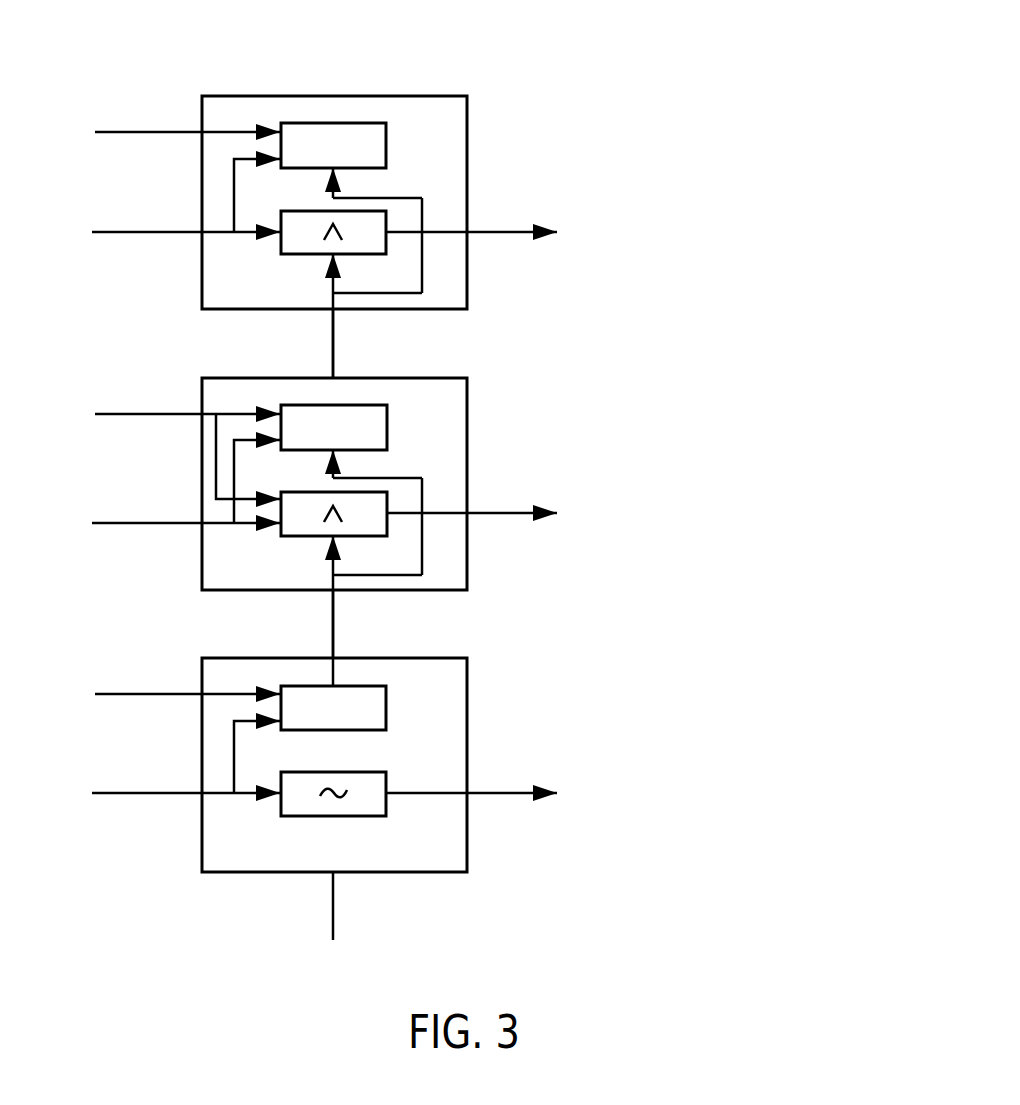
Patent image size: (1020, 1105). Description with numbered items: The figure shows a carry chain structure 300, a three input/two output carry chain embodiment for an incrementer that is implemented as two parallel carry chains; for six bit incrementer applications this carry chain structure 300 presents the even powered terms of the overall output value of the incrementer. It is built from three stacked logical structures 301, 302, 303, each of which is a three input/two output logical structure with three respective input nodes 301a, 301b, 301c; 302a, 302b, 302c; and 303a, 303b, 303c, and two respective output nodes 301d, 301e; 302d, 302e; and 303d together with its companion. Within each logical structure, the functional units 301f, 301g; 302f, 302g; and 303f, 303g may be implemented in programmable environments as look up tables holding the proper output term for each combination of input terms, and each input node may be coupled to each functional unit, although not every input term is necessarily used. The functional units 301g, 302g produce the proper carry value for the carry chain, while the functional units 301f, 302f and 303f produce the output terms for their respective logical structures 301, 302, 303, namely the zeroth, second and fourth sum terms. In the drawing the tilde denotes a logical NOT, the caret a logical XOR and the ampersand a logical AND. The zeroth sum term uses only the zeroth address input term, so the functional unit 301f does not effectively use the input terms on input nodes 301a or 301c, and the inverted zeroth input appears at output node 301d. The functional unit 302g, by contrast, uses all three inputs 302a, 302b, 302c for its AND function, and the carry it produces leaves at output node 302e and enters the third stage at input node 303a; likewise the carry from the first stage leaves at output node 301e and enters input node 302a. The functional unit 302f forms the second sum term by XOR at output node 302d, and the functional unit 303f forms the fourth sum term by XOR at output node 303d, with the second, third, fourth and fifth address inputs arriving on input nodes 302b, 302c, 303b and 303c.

The carry chain structure 300 is at (752, 64).
The logical structure 301 is at (450, 733).
The input node 301a is at (334, 912).
The input node 301b is at (141, 795).
The input node 301c is at (141, 696).
The output node 301d is at (503, 797).
The output node 301e is at (271, 624).
The functional unit 301f is at (358, 816).
The functional unit 301g is at (377, 714).
The logical structure 302 is at (450, 453).
The input node 302a is at (330, 624).
The input node 302b is at (141, 525).
The input node 302c is at (141, 416).
The output node 302d is at (503, 517).
The output node 302e is at (272, 343).
The functional unit 302f is at (296, 538).
The functional unit 302g is at (377, 433).
The logical structure 303 is at (450, 171).
The input node 303a is at (330, 344).
The input node 303b is at (141, 234).
The input node 303c is at (141, 134).
The output node 303d is at (503, 236).
The functional unit 303f is at (296, 256).
The functional unit 303g is at (377, 151).